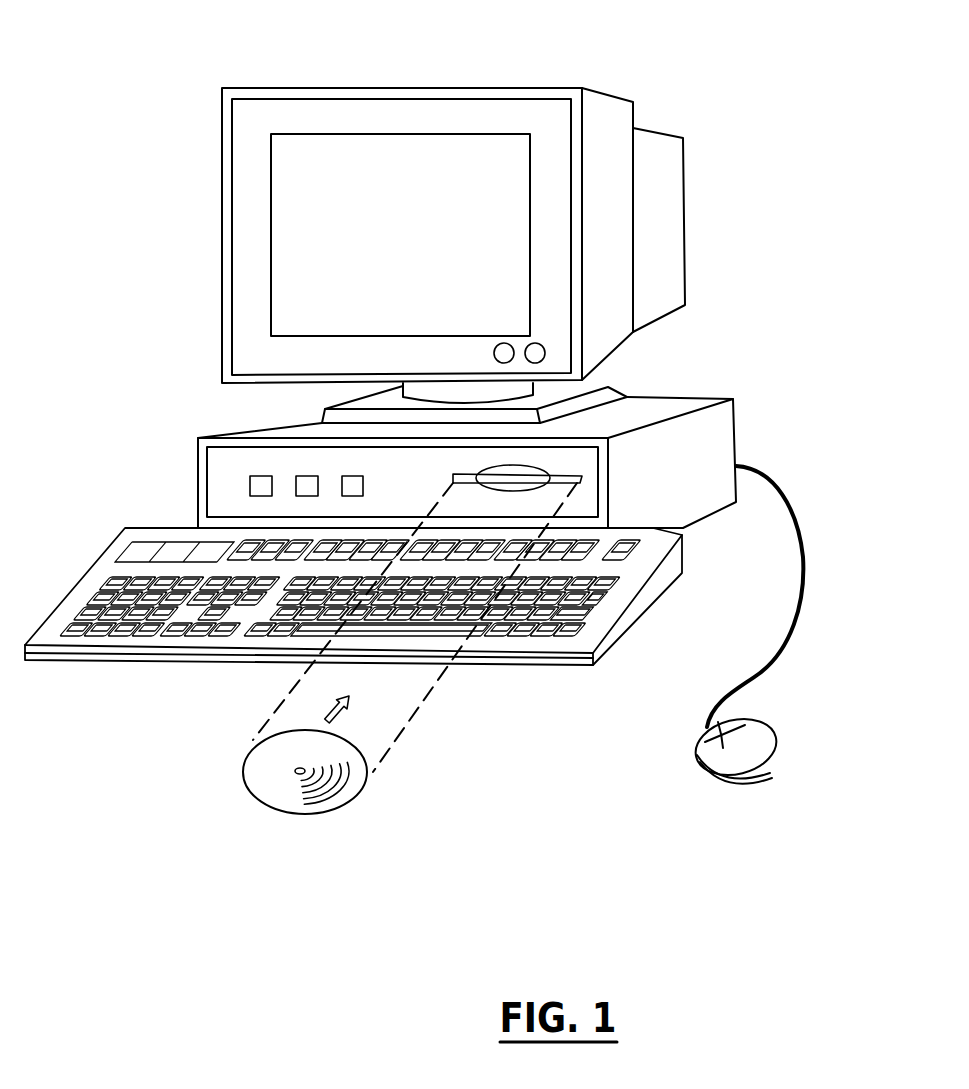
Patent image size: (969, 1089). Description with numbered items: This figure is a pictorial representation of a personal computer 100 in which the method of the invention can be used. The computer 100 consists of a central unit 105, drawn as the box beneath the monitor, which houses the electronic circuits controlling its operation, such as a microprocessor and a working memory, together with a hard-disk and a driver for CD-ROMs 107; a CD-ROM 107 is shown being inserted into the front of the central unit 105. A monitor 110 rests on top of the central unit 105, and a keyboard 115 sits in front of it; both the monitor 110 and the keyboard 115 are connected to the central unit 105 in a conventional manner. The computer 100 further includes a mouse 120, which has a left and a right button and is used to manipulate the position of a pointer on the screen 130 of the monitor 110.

The personal computer 100 is at (765, 83).
The central unit 105 is at (738, 442).
The CD-ROM 107 is at (327, 812).
The monitor 110 is at (222, 248).
The keyboard 115 is at (615, 645).
The mouse 120 is at (777, 757).
The screen 130 is at (373, 255).